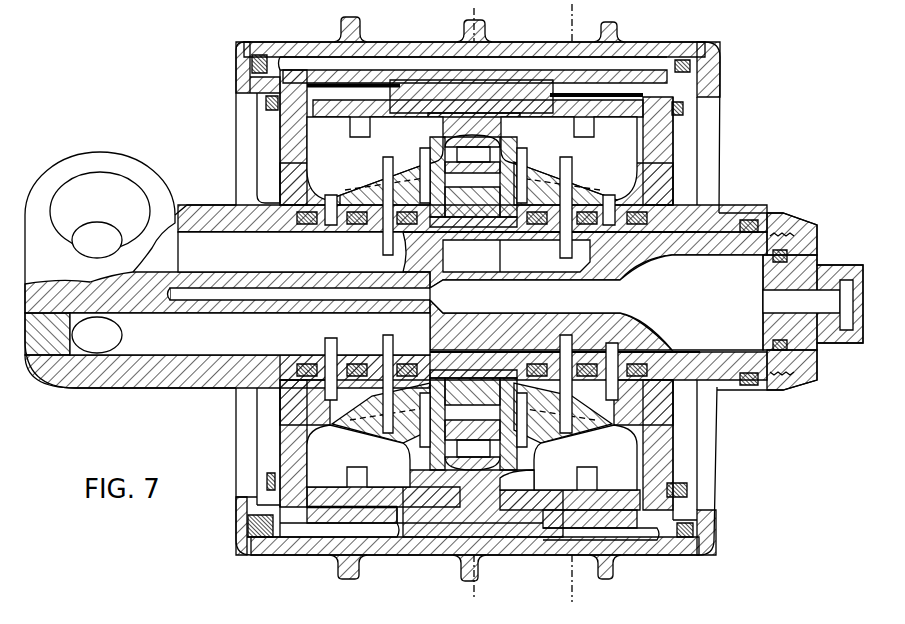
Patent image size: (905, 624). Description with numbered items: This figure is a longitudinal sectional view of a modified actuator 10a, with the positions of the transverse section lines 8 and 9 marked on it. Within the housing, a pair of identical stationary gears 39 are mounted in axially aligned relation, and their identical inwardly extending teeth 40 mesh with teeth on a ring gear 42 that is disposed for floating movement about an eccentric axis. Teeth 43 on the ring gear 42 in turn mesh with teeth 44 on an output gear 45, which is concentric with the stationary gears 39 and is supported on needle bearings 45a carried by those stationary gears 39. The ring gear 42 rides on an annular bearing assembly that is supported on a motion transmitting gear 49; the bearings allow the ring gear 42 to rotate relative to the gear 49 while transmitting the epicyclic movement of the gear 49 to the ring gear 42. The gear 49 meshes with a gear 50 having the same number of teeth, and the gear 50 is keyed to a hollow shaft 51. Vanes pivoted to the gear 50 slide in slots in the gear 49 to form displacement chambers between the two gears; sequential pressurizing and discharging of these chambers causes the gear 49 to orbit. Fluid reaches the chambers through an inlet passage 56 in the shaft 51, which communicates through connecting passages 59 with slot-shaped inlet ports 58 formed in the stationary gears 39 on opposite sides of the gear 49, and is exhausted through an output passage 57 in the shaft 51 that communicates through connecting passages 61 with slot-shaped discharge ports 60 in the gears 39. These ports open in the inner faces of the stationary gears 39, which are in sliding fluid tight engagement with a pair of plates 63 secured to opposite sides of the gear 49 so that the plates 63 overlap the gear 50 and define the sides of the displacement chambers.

The actuator 10a is at (728, 74).
The section line 8- 8 is at (492, 10).
The section line 9- 9 is at (592, 13).
The stationary gears 39 is at (287, 432).
The inwardly extending teeth 40 is at (335, 512).
The ring gear 42 is at (508, 478).
The teeth 43 is at (404, 520).
The teeth 44 is at (497, 535).
The output gear 45 is at (290, 558).
The needle bearings 45a is at (296, 537).
The motion transmitting gear 49 is at (432, 246).
The gear 50 is at (491, 247).
The hollow shaft 51 is at (88, 368).
The inlet passage 56 is at (183, 250).
The output passage 57 is at (203, 344).
The inlet ports 58 is at (418, 446).
The connecting passages 59 is at (393, 185).
The discharge ports 60 is at (446, 135).
The connecting passages 61 is at (620, 208).
The plates 63 is at (507, 132).